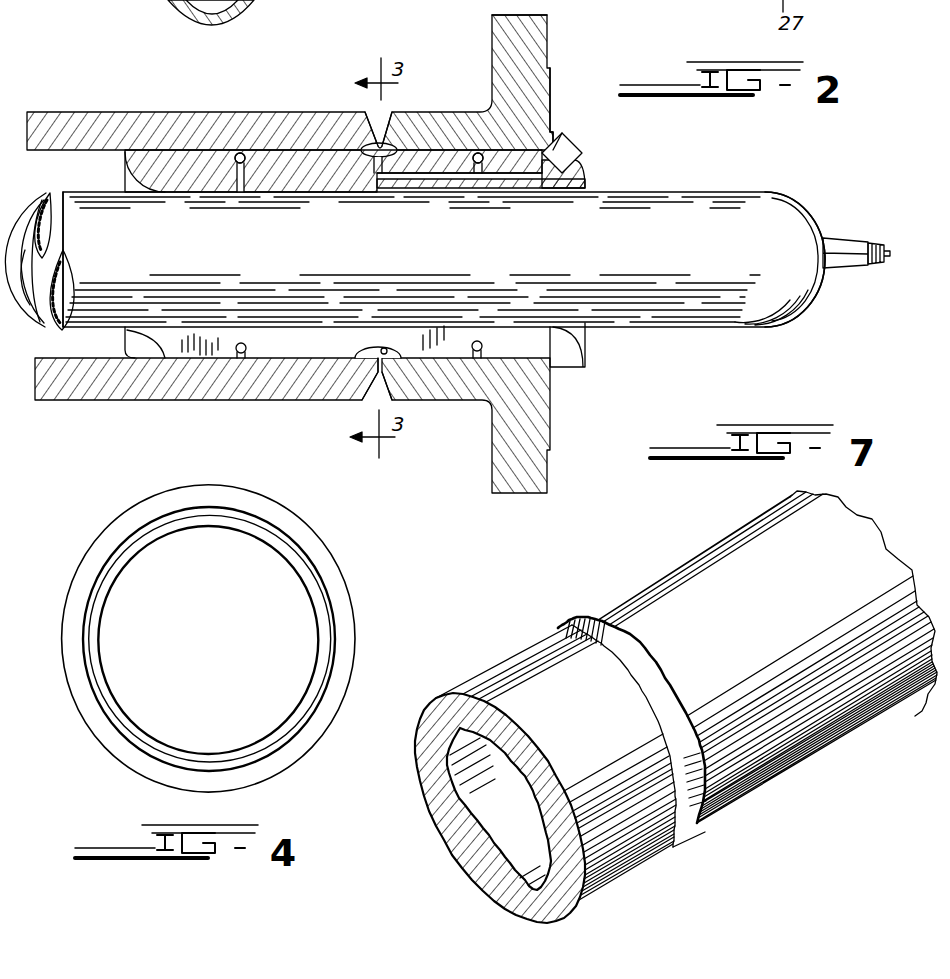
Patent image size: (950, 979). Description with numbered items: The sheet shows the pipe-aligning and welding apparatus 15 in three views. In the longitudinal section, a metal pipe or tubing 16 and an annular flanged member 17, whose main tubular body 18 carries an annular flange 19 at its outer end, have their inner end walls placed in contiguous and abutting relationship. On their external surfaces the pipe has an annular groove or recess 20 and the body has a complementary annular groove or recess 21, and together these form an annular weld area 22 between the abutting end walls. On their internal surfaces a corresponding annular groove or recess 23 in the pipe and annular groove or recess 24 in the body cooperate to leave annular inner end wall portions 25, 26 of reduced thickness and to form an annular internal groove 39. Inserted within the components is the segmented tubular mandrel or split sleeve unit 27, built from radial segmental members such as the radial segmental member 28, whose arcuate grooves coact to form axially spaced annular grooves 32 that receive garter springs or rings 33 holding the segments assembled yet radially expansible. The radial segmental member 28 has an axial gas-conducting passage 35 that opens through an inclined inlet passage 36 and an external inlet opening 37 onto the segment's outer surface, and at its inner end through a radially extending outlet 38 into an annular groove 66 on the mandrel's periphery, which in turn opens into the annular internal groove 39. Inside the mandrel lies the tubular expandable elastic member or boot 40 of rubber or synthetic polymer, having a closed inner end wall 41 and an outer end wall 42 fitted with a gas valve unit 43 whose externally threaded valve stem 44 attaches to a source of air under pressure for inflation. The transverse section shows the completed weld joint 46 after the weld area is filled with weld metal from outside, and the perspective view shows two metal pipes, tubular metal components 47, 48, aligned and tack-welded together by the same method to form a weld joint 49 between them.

In FIG. 2, the apparatus 15 is at (656, 188).
In FIG. 2, the metal pipe or tubing 16 is at (279, 2).
In FIG. 4, the metal pipe or tubing 16 is at (341, 556).
In FIG. 2, the annular flanged member 17 is at (526, 77).
In FIG. 2, the main tubular body 18 is at (482, 112).
In FIG. 2, the annular flange 19 is at (540, 30).
In FIG. 2, the annular groove or recess 20 is at (372, 135).
In FIG. 2, the annular groove or recess 21 is at (386, 138).
In FIG. 2, the annular weld area 22 is at (386, 396).
In FIG. 2, the annular groove or recess 23 is at (372, 156).
In FIG. 2, the annular groove or recess 24 is at (393, 166).
In FIG. 2, the inner end wall portion 25 is at (366, 366).
In FIG. 4, the inner end wall portion 25 is at (293, 545).
In FIG. 2, the inner end wall portion 26 is at (388, 373).
In FIG. 2, the segmented tubular mandrel or split sleeve unit 27 is at (588, 138).
In FIG. 4, the segmented tubular mandrel or split sleeve unit 27 is at (305, 630).
In FIG. 2, the radial segmental member 28 is at (162, 180).
In FIG. 2, the annular grooves 32 is at (234, 166).
In FIG. 2, the garter springs or rings 33 is at (243, 162).
In FIG. 2, the gas-conducting passage 35 is at (435, 178).
In FIG. 2, the inclined inlet passage 36 is at (554, 178).
In FIG. 2, the external inlet opening 37 is at (565, 140).
In FIG. 2, the radially extending outlet 38 is at (375, 168).
In FIG. 2, the annular internal groove 39 is at (396, 138).
In FIG. 2, the tubular expandable elastic member or boot 40 is at (765, 181).
In FIG. 2, the closed inner end wall 41 is at (30, 296).
In FIG. 2, the outer end wall 42 is at (794, 220).
In FIG. 2, the gas valve unit 43 is at (842, 268).
In FIG. 2, the externally threaded valve stem 44 is at (882, 238).
In FIG. 4, the completed weld joint 46 is at (340, 585).
In FIG. 7, the tubular metal component 47 is at (487, 908).
In FIG. 7, the tubular metal component 48 is at (841, 545).
In FIG. 7, the weld joint 49 is at (668, 693).
In FIG. 2, the annular groove 66 is at (386, 349).